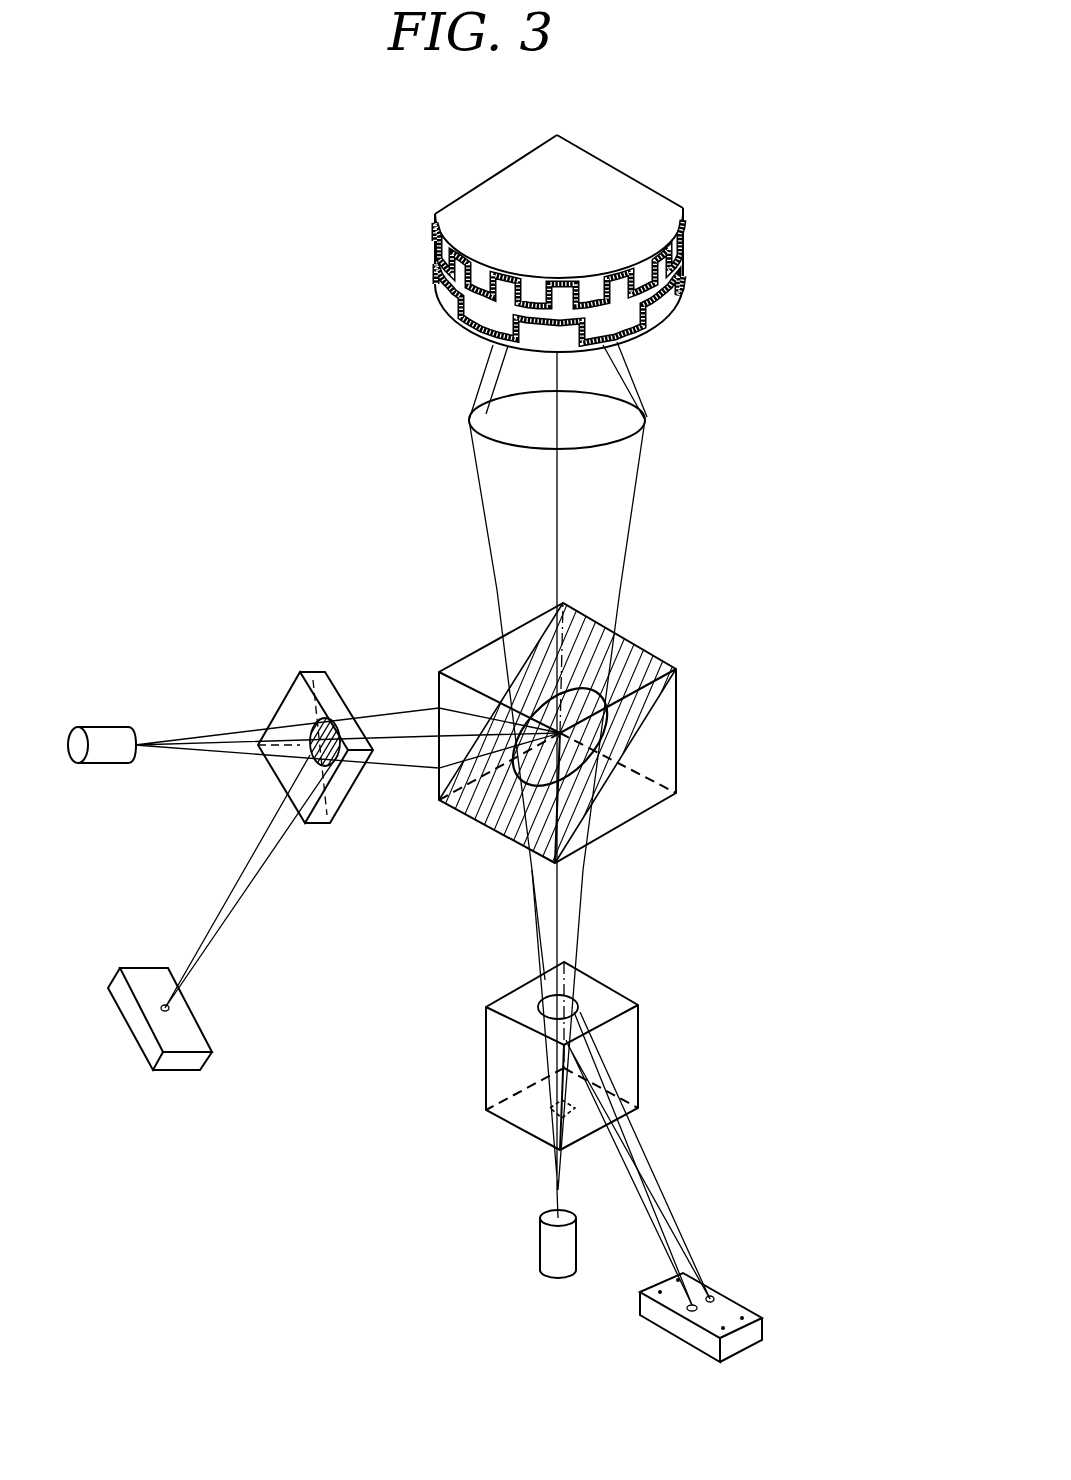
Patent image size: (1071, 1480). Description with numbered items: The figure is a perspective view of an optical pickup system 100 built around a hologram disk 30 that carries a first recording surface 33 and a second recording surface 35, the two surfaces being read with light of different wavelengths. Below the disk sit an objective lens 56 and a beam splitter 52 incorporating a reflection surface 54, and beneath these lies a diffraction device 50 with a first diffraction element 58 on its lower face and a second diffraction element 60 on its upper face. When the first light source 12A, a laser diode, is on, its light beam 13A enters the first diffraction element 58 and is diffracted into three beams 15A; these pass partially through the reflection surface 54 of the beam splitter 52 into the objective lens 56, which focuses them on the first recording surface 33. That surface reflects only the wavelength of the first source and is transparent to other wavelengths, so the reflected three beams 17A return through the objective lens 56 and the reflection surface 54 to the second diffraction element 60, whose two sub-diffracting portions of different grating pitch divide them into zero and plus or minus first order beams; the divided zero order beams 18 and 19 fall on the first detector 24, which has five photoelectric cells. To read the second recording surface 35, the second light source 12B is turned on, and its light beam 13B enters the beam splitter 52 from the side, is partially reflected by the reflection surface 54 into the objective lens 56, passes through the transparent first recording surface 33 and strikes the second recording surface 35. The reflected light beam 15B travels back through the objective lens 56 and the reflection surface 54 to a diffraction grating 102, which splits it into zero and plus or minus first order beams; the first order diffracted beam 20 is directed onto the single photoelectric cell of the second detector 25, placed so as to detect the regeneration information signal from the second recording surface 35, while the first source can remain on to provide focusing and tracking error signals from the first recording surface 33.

The optical pickup system 100 is at (847, 81).
The hologram disk 30 is at (522, 215).
The second recording surface 35 is at (433, 243).
The first recording surface 33 is at (433, 308).
The reflected light beam 15B is at (507, 399).
The reflected three beams 17A is at (480, 371).
The objective lens 56 is at (645, 418).
The beam splitter 52 is at (565, 713).
The reflection surface 54 is at (590, 805).
The second light source 12B is at (125, 727).
The light beam 13B is at (220, 740).
The diffraction grating 102 is at (342, 690).
The first order diffracted beam 20 is at (232, 918).
The second detector 25 is at (211, 1062).
The three beams 15A is at (538, 920).
The diffraction device 50 is at (609, 1064).
The second diffraction element 60 is at (568, 1003).
The first diffraction element 58 is at (520, 1130).
The first light source 12A is at (560, 1268).
The light beam 13A is at (540, 1203).
The zero order diffracted beam 18 is at (660, 1243).
The zero order diffracted beam 19 is at (660, 1183).
The first detector 24 is at (769, 1296).